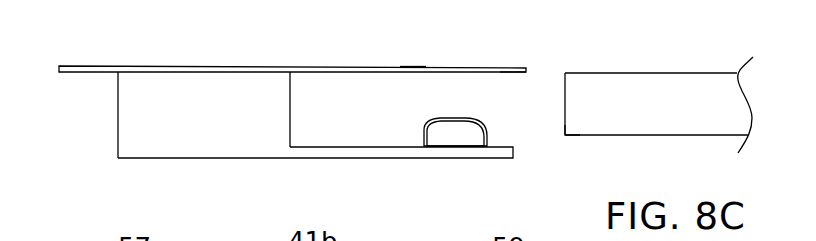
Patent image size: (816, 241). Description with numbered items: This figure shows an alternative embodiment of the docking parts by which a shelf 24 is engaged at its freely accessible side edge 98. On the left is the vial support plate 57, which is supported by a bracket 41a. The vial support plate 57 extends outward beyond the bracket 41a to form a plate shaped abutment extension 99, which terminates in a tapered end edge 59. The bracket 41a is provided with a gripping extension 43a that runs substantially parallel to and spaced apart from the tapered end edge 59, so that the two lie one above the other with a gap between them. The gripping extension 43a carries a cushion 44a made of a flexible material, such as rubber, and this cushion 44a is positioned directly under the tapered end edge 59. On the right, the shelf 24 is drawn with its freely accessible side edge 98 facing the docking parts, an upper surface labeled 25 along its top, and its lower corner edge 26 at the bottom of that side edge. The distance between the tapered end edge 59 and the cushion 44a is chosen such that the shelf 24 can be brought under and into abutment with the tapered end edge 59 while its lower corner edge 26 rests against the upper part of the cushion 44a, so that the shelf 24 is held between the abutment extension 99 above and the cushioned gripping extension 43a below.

The vial support plate 57 is at (135, 66).
The tapered end edge 59 is at (512, 68).
The plate shaped abutment extension 99 is at (413, 67).
The bracket 41a is at (263, 112).
The gripping extension 43a is at (395, 158).
The cushion 44a is at (450, 119).
The freely accessible side edge 98 is at (565, 100).
The panel top surface 25 is at (648, 72).
The shelf 24 is at (678, 127).
The lower corner edge 26 is at (563, 135).